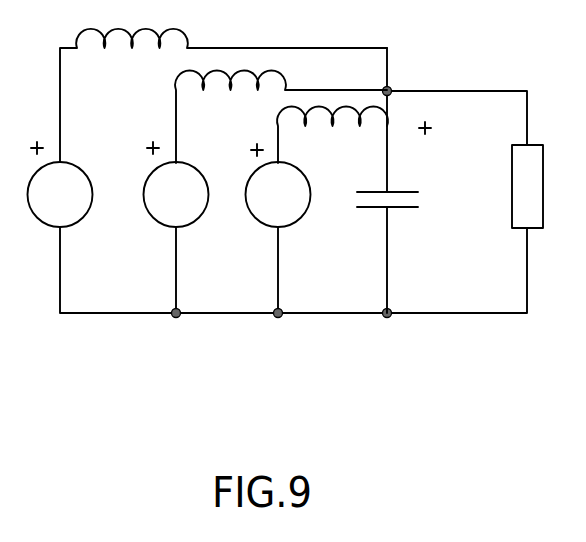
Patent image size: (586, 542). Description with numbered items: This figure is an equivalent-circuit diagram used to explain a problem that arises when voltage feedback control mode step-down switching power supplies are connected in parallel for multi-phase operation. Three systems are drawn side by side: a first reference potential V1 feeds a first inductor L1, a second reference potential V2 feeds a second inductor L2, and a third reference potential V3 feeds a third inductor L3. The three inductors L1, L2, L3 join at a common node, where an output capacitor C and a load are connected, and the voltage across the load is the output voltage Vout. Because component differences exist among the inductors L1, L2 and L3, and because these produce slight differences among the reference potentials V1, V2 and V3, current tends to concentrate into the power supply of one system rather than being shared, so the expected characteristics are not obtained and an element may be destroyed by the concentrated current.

The inductor L1 is at (223, 95).
The inductor L2 is at (281, 117).
The inductor L3 is at (332, 136).
The reference potential V1 is at (50, 202).
The reference potential V2 is at (166, 202).
The reference potential V3 is at (269, 203).
The capacitor C is at (395, 252).
The output voltage across load Vout is at (481, 175).